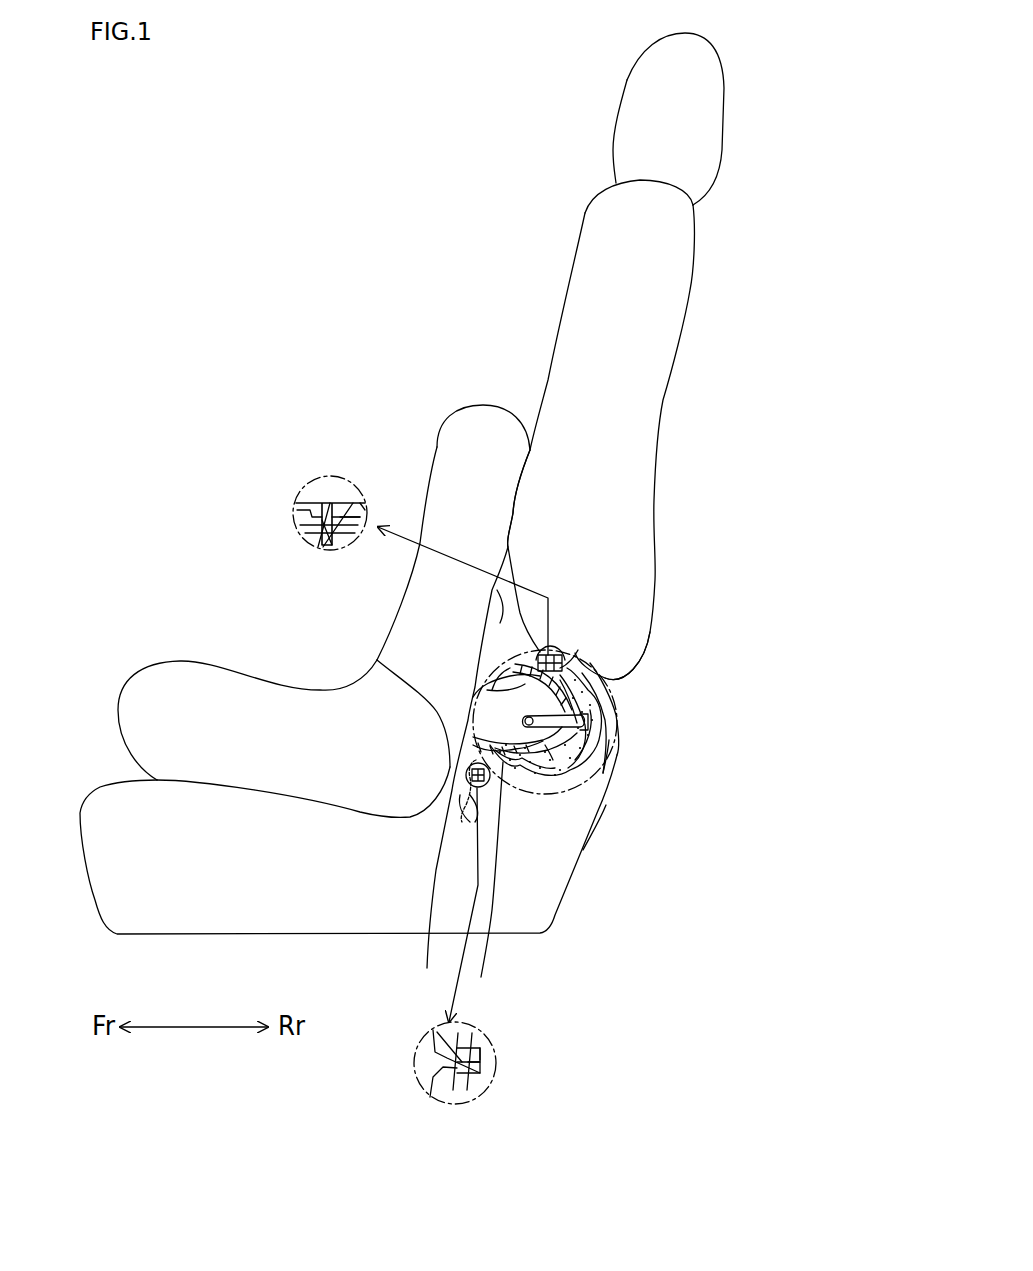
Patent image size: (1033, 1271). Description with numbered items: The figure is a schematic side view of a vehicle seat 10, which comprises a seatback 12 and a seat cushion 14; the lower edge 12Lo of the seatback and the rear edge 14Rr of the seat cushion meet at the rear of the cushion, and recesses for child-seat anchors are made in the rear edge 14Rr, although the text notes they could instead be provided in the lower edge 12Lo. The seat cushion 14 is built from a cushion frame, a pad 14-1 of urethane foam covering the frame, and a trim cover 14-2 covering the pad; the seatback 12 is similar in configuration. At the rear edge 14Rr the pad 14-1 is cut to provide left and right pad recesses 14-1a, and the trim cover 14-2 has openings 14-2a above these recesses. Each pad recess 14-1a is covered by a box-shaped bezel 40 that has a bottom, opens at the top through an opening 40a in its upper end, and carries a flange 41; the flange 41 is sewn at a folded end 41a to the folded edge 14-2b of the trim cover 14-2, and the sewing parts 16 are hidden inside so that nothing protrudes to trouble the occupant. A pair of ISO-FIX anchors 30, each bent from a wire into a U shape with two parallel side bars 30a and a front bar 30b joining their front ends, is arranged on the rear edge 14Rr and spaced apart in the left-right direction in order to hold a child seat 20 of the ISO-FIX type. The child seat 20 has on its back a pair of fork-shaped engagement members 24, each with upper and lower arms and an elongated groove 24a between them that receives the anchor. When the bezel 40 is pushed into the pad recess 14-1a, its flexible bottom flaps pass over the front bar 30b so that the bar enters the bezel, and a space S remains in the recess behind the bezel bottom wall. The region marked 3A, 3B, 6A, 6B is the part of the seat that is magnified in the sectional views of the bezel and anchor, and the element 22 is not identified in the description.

The vehicle seat 10 is at (527, 340).
The seatback 12 is at (632, 430).
The lower edge of the seatback 12Lo is at (612, 617).
The seat cushion 14 is at (404, 788).
The pad 14-1 is at (598, 765).
The pad recesses 14-1a is at (590, 745).
The trim cover 14-2 is at (578, 650).
The openings 14-2a is at (284, 711).
The folded edge of the trim cover 14-2b is at (340, 543).
The rear edge of the seat cushion 14Rr is at (607, 707).
The sewing parts 16 is at (312, 525).
The child seat 20 is at (401, 497).
The wire harness 22 is at (505, 640).
The engagement members 24 is at (487, 690).
The elongated groove 24a is at (550, 760).
The ISO-FIX anchors 30 is at (603, 714).
The side bars 30a is at (595, 720).
The front bar 30b is at (483, 884).
The bezel 40 is at (595, 693).
The opening 40a is at (470, 725).
The flange 41 is at (510, 663).
The folded end 41a is at (323, 547).
The part 3A, 3B, 6A, 6B 3A is at (640, 724).
The part 3A, 3B, 6A, 6B 3B is at (573, 721).
The part 3A, 3B, 6A, 6B 6A is at (525, 759).
The part 3A, 3B, 6A 6B is at (583, 735).
The space S is at (543, 762).